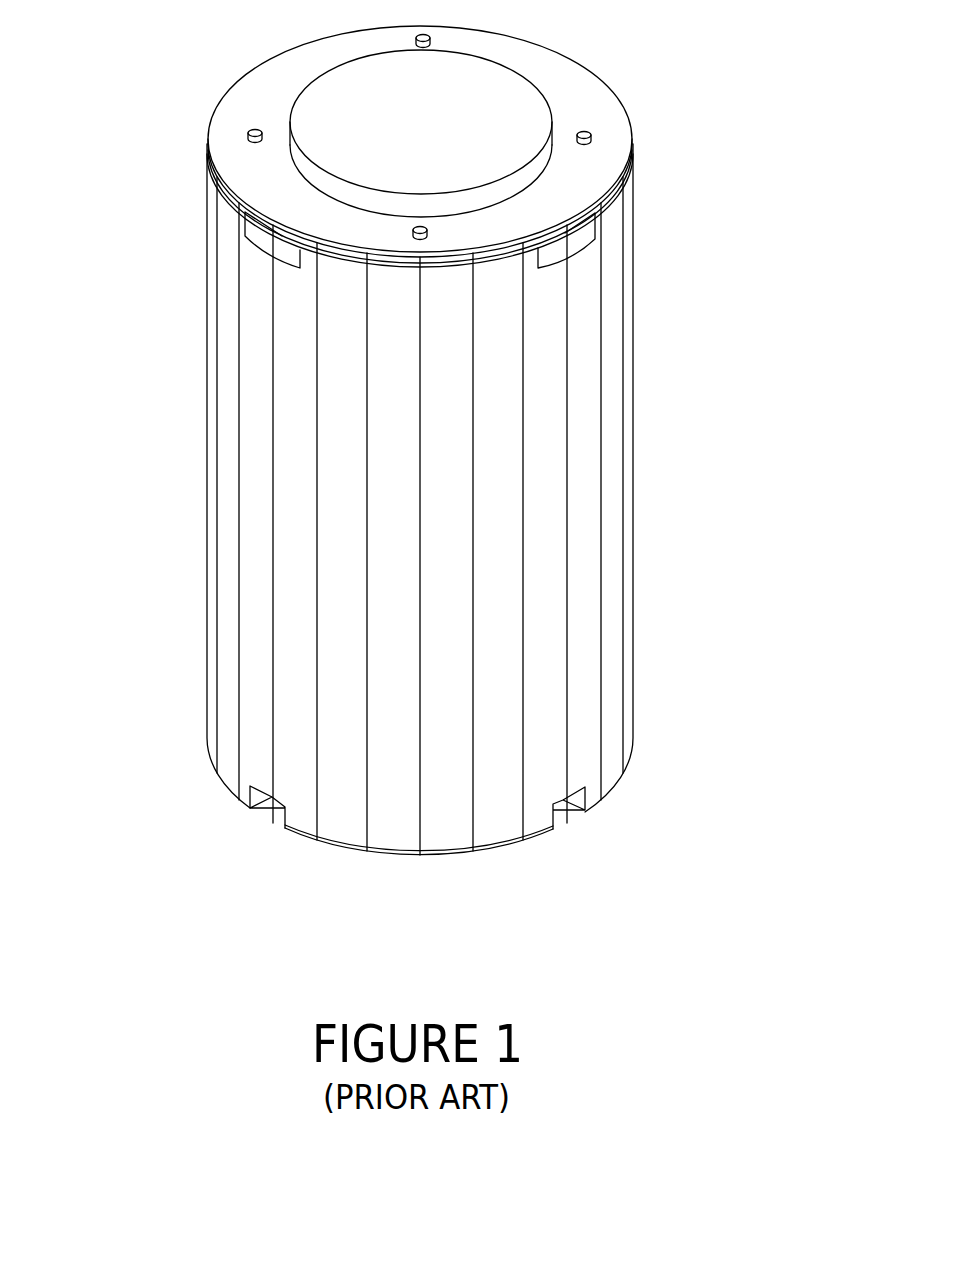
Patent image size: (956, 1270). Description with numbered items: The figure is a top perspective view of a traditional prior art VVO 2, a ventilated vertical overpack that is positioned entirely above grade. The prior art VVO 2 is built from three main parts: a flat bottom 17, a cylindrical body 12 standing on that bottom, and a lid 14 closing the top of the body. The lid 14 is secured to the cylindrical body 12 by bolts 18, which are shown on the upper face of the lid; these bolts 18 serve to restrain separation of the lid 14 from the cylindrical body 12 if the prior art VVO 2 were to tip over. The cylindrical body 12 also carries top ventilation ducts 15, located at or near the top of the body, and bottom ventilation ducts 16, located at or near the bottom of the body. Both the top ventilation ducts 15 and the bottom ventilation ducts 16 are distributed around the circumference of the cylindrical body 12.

The prior art VVO 2 is at (725, 204).
The cylindrical body 12 is at (613, 472).
The lid 14 is at (603, 133).
The top ventilation ducts 15 is at (279, 243).
The bottom ventilation ducts 16 is at (273, 807).
The flat bottom 17 is at (490, 848).
The bolts 18 is at (262, 130).